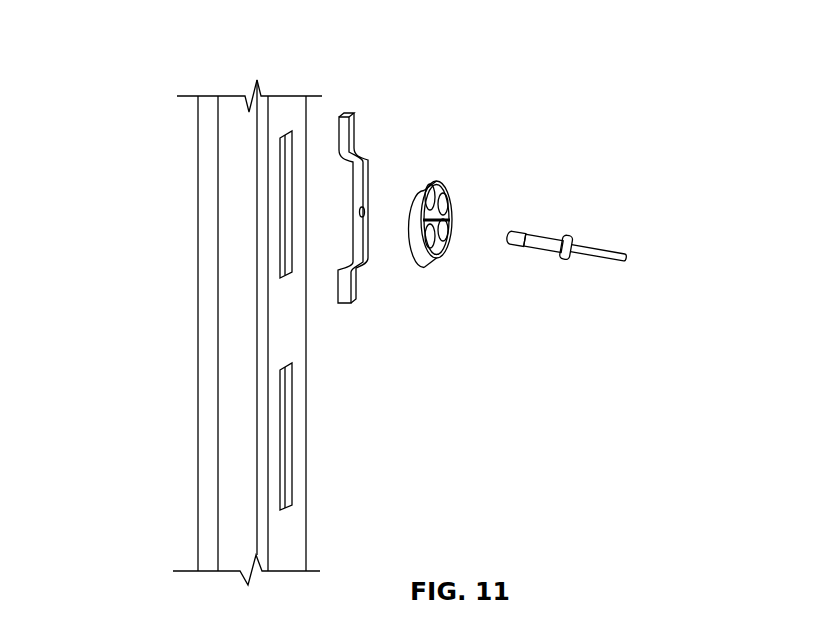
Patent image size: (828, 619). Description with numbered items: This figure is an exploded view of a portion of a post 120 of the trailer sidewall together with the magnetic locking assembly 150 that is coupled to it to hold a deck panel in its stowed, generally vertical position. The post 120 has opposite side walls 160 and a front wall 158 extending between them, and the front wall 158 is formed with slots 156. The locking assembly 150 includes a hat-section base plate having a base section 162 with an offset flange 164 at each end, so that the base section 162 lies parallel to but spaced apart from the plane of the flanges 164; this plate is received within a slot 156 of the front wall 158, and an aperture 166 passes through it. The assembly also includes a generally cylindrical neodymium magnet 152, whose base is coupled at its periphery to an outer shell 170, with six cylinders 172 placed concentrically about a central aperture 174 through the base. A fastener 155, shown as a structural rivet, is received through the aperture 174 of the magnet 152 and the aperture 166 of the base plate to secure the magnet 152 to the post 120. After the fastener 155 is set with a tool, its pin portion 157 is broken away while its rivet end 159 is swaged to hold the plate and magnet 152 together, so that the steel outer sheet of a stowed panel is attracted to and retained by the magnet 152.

The post 120 is at (156, 46).
The locking assembly 150 is at (672, 191).
The magnet 152 is at (424, 282).
The fastener 155 is at (576, 268).
The slot 156 is at (282, 205).
The pin portion 157 is at (598, 262).
The front wall 158 is at (280, 303).
The rivet end 159 is at (513, 245).
The side walls 160 is at (230, 177).
The base section 162 is at (365, 183).
The offset flange 164 is at (350, 128).
The aperture 166 is at (366, 212).
The outer shell 170 is at (415, 265).
The cylinders 172 is at (452, 210).
The aperture 174 is at (458, 211).